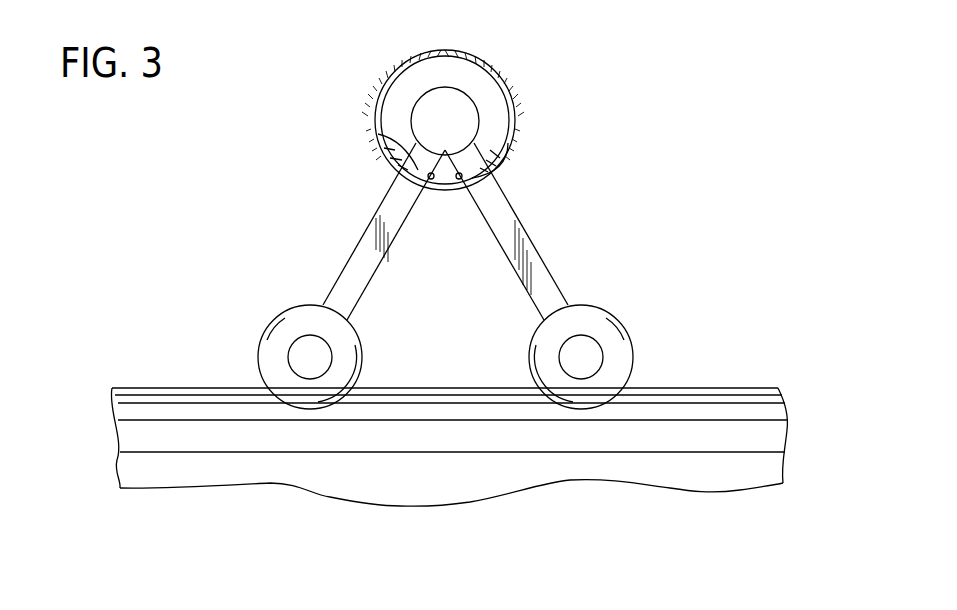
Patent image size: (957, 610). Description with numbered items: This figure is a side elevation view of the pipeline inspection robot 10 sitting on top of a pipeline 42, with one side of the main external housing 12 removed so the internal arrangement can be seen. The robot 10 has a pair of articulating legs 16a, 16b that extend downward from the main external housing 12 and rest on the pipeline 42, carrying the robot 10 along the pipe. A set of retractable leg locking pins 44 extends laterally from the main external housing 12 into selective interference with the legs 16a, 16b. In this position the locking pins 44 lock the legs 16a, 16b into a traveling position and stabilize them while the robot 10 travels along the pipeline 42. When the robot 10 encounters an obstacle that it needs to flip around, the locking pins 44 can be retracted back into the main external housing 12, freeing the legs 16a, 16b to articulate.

The pipeline inspection robot 10 is at (545, 68).
The main external housing 12 is at (400, 58).
The leg 16a is at (352, 277).
The leg 16b is at (545, 283).
The pipeline 42 is at (768, 442).
The retractable leg locking pins 44 is at (378, 134).